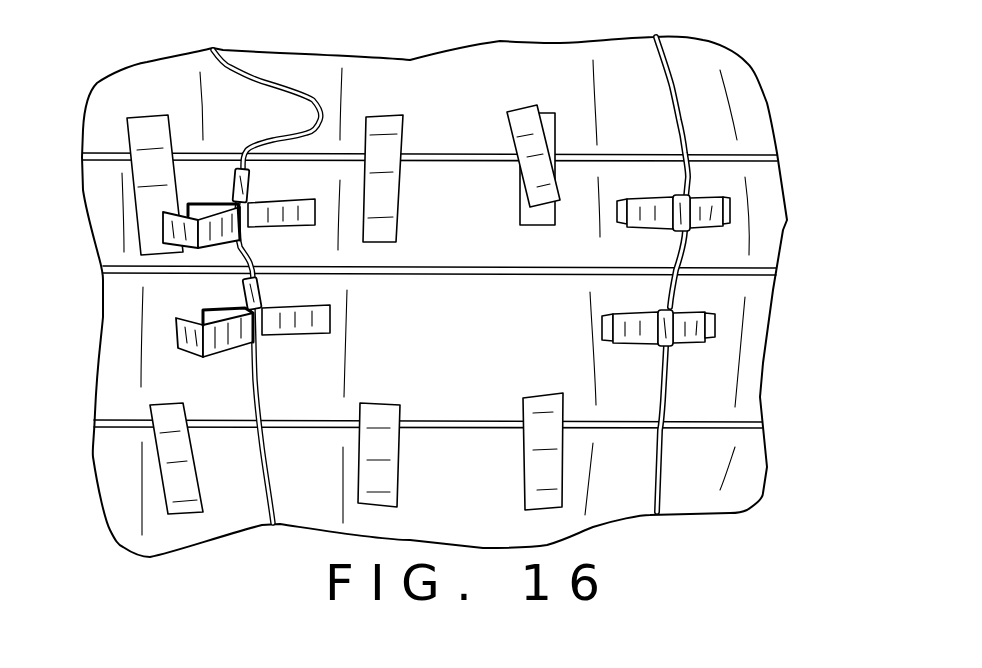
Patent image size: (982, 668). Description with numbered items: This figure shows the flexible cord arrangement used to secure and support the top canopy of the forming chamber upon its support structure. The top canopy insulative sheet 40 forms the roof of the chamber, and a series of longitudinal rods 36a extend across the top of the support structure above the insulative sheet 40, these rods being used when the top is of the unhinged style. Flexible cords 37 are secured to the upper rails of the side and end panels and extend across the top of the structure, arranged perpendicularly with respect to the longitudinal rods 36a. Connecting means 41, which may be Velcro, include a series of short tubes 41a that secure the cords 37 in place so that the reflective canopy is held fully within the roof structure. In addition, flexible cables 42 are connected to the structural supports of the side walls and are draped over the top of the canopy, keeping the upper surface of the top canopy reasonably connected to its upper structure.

The top canopy insulative sheet 40 is at (720, 485).
The longitudinal rods 36a is at (480, 153).
The flexible cord 37 is at (260, 77).
The flexible cable 42 is at (667, 88).
The connecting means 41 is at (203, 317).
The short tubes 41a is at (240, 183).